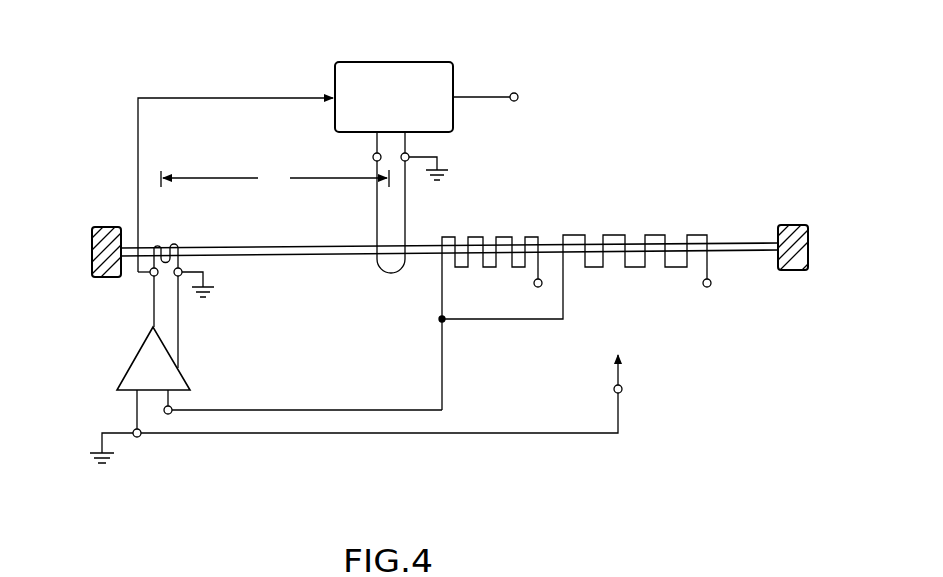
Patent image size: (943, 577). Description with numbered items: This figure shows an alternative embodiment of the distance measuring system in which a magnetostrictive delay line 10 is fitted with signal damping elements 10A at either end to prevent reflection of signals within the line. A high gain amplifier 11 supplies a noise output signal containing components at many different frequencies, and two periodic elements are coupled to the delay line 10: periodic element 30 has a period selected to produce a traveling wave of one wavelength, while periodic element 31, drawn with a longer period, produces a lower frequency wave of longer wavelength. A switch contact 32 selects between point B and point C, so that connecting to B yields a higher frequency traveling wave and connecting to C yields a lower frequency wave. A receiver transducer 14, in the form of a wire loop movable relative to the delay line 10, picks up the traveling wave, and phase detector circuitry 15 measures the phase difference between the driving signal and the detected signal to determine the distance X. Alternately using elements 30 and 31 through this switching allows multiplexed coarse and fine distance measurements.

The magnetostrictive delay line 10 is at (716, 240).
The signal damping elements 10A is at (106, 226).
The high gain amplifier 11 is at (142, 346).
The receiver transducer 14 is at (405, 221).
The phase detector circuitry 15 is at (428, 62).
The periodic element 30 is at (507, 225).
The periodic element 31 is at (628, 225).
The switch contact 32 is at (621, 379).